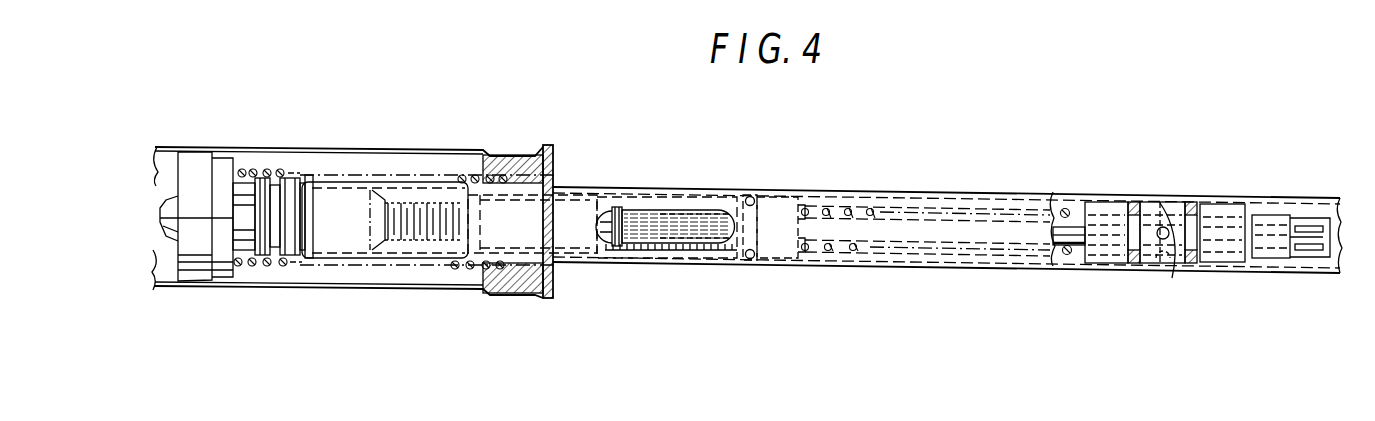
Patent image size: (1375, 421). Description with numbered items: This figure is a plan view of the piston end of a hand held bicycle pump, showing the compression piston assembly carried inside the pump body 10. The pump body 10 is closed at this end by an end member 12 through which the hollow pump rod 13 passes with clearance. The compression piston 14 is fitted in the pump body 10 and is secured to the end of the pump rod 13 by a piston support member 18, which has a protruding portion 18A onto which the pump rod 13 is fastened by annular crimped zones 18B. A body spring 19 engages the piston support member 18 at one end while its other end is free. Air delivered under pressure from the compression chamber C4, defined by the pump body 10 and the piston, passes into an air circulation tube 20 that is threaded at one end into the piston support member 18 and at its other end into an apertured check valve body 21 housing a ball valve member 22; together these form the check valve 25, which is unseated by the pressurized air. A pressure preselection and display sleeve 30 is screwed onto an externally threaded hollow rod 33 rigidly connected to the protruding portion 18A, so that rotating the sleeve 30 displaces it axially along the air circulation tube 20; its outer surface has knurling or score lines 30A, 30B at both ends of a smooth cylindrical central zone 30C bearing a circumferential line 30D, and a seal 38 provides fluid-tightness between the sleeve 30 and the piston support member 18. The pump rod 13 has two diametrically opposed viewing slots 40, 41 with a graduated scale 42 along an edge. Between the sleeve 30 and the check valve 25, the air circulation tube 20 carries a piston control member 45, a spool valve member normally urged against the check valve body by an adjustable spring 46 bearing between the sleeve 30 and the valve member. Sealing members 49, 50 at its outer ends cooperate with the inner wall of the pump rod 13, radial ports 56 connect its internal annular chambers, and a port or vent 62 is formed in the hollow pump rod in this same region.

The pump body 10 is at (456, 149).
The end member 12 is at (527, 160).
The pump rod 13 is at (837, 190).
The compression piston 14 is at (197, 165).
The piston support member 18 is at (316, 178).
The protruding portion 18A is at (348, 190).
The annular crimped zones 18B is at (303, 183).
The body spring 19 is at (250, 266).
The air circulation tube 20 is at (1077, 228).
The check valve body 21 is at (1262, 212).
The ball valve member 22 is at (1288, 232).
The check valve 25 is at (1312, 217).
The sleeve 30 is at (603, 236).
The knurling or score lines 30A is at (697, 218).
The knurling or score lines 30B is at (572, 210).
The smooth cylindrical central zone 30C is at (622, 232).
The circumferential line 30D is at (617, 222).
The hollow rod 33 is at (406, 216).
The seal 38 is at (752, 196).
The viewing slot 40 is at (686, 240).
The viewing slot 41 is at (710, 288).
The graduated scale 42 is at (650, 251).
The piston control member 45 is at (1191, 203).
The adjustable spring 46 is at (1063, 210).
The sealing member 49 is at (1136, 208).
The sealing member 50 is at (1198, 204).
The radial ports 56 is at (1163, 250).
The port or vent 62 is at (1150, 205).
The compression chamber C4 is at (165, 262).